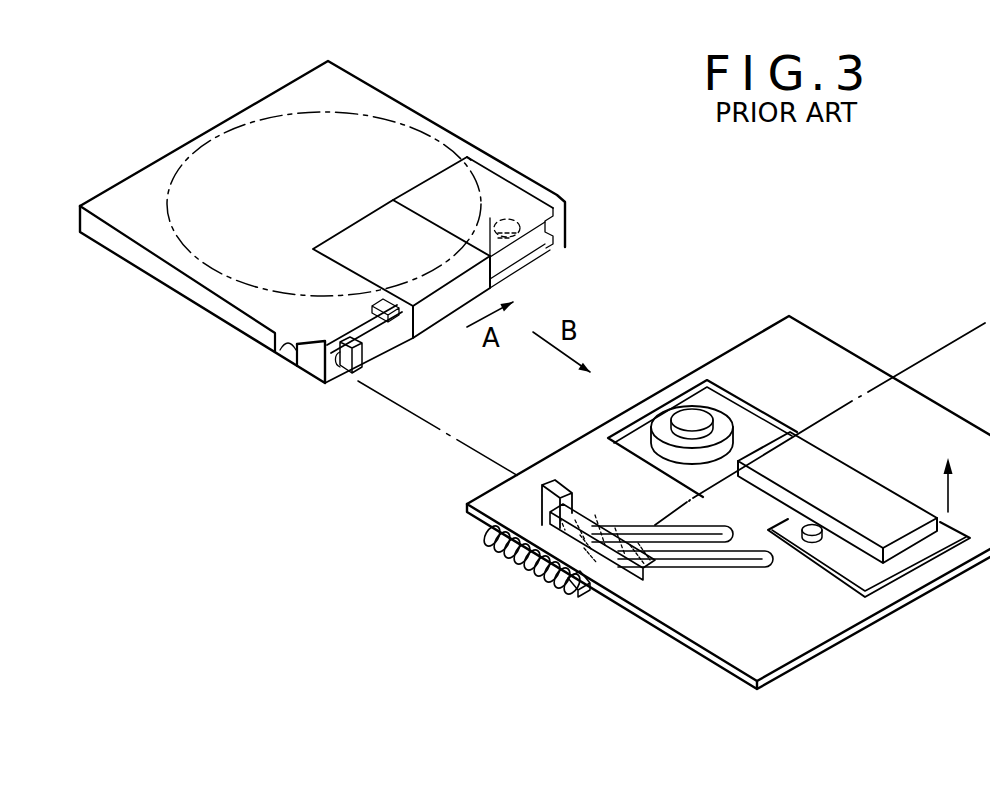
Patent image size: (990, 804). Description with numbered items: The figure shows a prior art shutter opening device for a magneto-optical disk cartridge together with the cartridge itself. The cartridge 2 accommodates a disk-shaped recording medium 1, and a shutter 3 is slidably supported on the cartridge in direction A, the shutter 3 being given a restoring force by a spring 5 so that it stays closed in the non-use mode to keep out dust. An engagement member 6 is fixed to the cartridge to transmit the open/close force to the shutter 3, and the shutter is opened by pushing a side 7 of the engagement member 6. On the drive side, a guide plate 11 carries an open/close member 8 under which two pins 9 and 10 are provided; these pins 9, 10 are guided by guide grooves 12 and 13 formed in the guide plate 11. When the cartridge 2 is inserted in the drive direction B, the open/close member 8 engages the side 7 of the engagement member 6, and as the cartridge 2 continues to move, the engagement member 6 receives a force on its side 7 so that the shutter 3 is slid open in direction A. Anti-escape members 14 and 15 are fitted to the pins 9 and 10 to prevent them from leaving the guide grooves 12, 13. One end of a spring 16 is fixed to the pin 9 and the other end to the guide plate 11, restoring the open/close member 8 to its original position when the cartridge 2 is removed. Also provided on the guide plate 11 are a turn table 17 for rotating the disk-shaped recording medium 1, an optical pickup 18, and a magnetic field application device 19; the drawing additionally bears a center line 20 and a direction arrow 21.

The disk-shaped recording medium 1 is at (373, 137).
The cartridge 2 is at (345, 83).
The shutter 3 is at (340, 253).
The spring 5 is at (520, 215).
The engagement member 6 is at (395, 340).
The side 7 is at (343, 369).
The open/close member 8 is at (547, 512).
The pin 9 is at (570, 593).
The pin 10 is at (623, 588).
The guide plate 11 is at (737, 648).
The guide groove 12 is at (693, 545).
The guide groove 13 is at (762, 568).
The anti-escape member 14 is at (583, 598).
The anti-escape member 15 is at (637, 594).
The spring 16 is at (505, 562).
The turn table 17 is at (688, 421).
The optical pickup 18 is at (820, 538).
The magnetic field application device 19 is at (867, 488).
The center line 20 is at (962, 328).
The direction arrow 21 is at (967, 485).